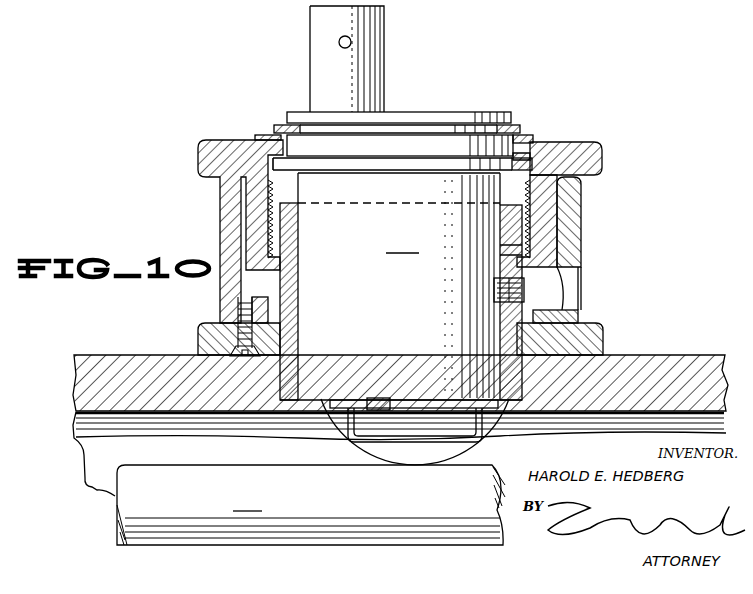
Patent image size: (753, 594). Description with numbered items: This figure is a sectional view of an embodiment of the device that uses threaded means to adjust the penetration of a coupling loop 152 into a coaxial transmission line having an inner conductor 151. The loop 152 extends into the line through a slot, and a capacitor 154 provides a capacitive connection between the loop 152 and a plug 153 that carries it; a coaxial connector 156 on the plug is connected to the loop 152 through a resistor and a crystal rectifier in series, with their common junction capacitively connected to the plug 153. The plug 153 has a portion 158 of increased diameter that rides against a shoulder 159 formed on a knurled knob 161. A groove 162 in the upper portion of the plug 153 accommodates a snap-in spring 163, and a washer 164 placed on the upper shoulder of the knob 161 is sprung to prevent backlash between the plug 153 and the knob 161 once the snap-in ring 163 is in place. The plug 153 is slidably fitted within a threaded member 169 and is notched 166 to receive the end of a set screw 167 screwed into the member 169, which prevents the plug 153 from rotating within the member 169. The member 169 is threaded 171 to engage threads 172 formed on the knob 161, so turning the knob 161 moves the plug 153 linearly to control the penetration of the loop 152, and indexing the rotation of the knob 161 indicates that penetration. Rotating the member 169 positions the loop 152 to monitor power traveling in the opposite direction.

The inner conductor 151 is at (311, 505).
The coupling loop 152 is at (390, 443).
The plug 153 is at (401, 286).
The capacitor 154 is at (347, 397).
The coaxial connector 156 is at (384, 91).
The portion of increased diameter 158 is at (532, 140).
The shoulder 159 is at (531, 154).
The knurled knob 161 is at (210, 143).
The groove 162 is at (458, 124).
The snap-in spring 163 is at (283, 126).
The washer 164 is at (260, 135).
The notch 166 is at (494, 250).
The set screw 167 is at (513, 291).
The threaded member 169 is at (590, 337).
The thread 171 is at (523, 216).
The threads 172 is at (530, 193).